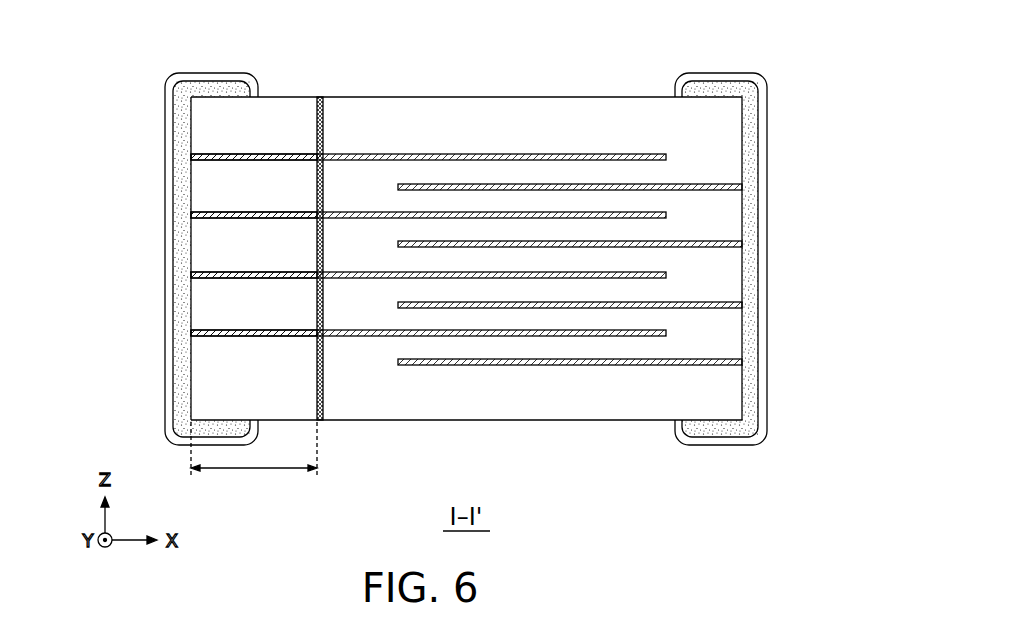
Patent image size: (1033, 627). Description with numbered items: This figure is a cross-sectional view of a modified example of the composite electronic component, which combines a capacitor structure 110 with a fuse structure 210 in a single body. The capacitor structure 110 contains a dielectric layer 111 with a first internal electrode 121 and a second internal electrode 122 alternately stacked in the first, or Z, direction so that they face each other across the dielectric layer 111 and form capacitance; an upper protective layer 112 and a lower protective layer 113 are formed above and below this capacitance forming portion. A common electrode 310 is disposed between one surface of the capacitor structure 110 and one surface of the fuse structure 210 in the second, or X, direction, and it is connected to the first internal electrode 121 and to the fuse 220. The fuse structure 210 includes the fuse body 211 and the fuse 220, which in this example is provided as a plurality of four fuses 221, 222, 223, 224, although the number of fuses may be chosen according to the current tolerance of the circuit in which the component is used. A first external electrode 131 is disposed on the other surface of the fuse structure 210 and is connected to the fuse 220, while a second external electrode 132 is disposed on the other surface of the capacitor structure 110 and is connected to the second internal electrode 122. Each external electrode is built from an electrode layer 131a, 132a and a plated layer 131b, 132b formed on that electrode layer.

The capacitor structure 110 is at (466, 250).
The dielectric layer 111 is at (466, 314).
The upper protective layer 112 is at (505, 115).
The lower protective layer 113 is at (593, 390).
The first internal electrode 121 is at (420, 337).
The second internal electrode 122 is at (458, 364).
The first external electrode 131 is at (149, 259).
The electrode layer 131a is at (174, 387).
The plated layer 131b is at (92, 384).
The second external electrode 132 is at (782, 259).
The electrode layer 132a is at (751, 258).
The plated layer 132b is at (836, 247).
The fuse structure 210 is at (176, 261).
The fuse body 211 is at (223, 119).
The fuse 220 is at (176, 256).
The fuse 221 is at (232, 161).
The fuse 222 is at (232, 219).
The fuse 223 is at (232, 279).
The fuse 224 is at (205, 344).
The common electrode 310 is at (325, 138).